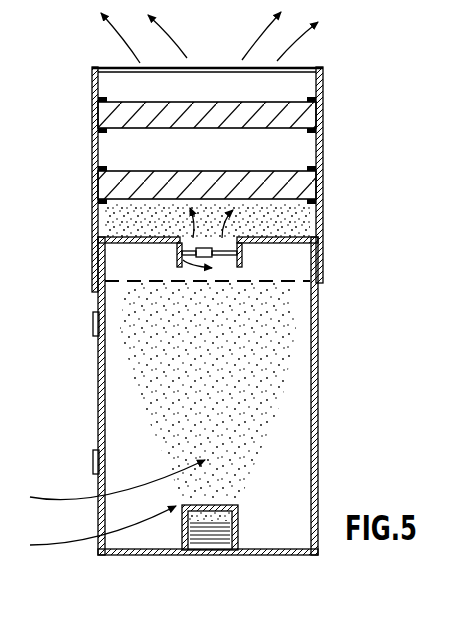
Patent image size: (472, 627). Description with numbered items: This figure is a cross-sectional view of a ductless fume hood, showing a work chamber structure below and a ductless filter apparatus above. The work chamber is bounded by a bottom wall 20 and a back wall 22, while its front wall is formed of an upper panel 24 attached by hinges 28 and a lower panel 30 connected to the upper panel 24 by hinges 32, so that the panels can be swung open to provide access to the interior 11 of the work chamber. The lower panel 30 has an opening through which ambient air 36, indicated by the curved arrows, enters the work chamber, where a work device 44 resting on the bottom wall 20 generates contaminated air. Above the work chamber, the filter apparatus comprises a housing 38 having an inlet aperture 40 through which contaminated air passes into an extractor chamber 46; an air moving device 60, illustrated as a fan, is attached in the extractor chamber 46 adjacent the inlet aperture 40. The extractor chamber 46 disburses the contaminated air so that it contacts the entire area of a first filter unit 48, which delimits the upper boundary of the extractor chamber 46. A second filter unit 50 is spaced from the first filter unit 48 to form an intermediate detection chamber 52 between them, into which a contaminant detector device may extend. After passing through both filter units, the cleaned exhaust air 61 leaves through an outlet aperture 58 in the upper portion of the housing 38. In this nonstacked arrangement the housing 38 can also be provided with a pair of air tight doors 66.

The interior of the work chamber 11 is at (279, 504).
The bottom wall 20 is at (182, 556).
The back wall 22 is at (318, 378).
The upper panel 24 is at (97, 373).
The hinges 28 is at (93, 321).
The lower panel 30 is at (98, 483).
The hinges 32 is at (93, 460).
The ambient air 36 is at (62, 503).
The housing 38 is at (326, 178).
The inlet aperture 40 is at (176, 261).
The work device 44 is at (241, 553).
The extractor chamber 46 is at (296, 218).
The first filter unit 48 is at (97, 185).
The second filter unit 50 is at (97, 110).
The intermediate detection chamber 52 is at (97, 148).
The outlet aperture 58 is at (222, 84).
The air moving device 60 is at (244, 262).
The exhaust air 61 is at (124, 38).
The air tight doors 66 is at (165, 63).